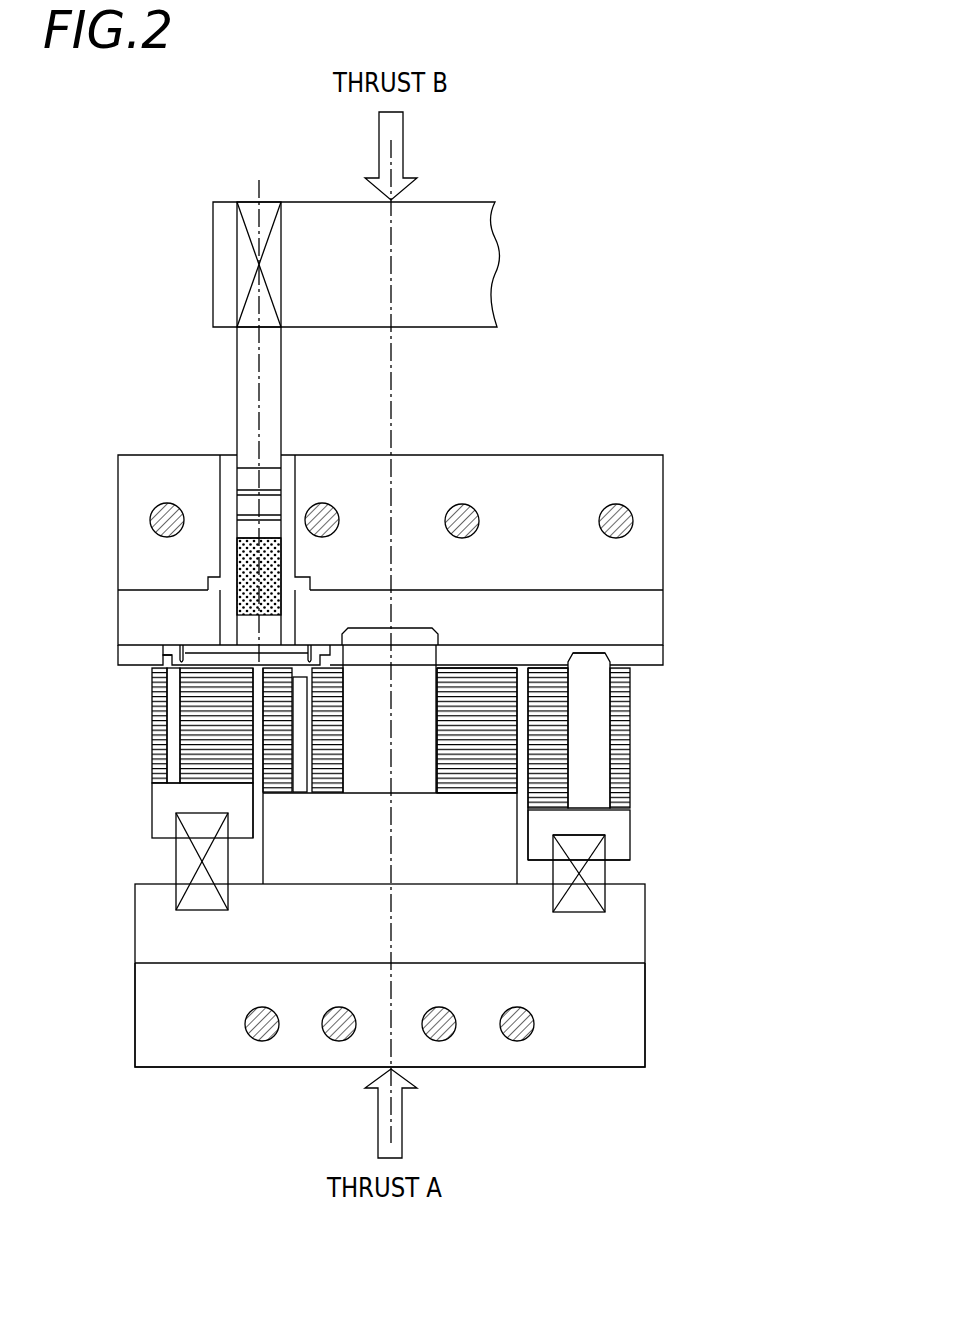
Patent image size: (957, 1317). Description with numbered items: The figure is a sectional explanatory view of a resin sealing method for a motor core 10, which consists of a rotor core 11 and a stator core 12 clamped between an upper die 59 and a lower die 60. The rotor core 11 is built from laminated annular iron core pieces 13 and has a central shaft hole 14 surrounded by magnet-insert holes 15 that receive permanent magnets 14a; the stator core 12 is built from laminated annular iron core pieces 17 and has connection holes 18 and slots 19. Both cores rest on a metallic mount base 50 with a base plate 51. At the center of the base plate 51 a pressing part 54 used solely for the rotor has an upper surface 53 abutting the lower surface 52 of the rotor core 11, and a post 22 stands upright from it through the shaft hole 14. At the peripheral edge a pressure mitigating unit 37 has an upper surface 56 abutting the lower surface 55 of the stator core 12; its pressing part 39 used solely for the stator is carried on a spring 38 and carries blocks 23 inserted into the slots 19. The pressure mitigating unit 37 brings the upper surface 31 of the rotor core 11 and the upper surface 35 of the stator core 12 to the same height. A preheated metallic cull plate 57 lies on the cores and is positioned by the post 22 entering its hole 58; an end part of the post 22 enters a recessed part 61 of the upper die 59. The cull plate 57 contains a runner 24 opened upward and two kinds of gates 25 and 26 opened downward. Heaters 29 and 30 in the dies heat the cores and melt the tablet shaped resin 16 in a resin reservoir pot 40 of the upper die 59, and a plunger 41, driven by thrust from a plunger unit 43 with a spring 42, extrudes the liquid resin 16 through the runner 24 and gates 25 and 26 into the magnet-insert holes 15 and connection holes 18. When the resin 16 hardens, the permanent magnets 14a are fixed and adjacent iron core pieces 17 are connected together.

The motor core 10 is at (418, 674).
The rotor core 11 is at (505, 670).
The stator core 12 is at (634, 748).
The annular iron core piece 13 is at (265, 750).
The shaft hole 14 is at (433, 722).
The permanent magnet 14a is at (157, 740).
The magnet-insert hole 15 is at (183, 698).
The resin 16 is at (237, 557).
The annular iron core piece 17 is at (220, 745).
The connection hole 18 is at (175, 679).
The slot 19 is at (606, 781).
The post 22 is at (370, 668).
The block 23 is at (592, 688).
The runner 24 is at (203, 652).
The gate 25 is at (305, 638).
The gate 26 is at (167, 640).
The heater 29 is at (339, 1043).
The heater 30 is at (477, 503).
The upper surface of rotor core 31 is at (548, 672).
The upper surface of stator core 35 is at (563, 655).
The pressure mitigating unit 37 is at (657, 858).
The spring 38 is at (607, 878).
The pressing part used solely for the stator 39 is at (590, 877).
The resin reservoir pot 40 is at (217, 546).
The plunger 41 is at (287, 487).
The spring 42 is at (222, 260).
The plunger unit 43 is at (211, 201).
The mount base 50 is at (653, 938).
The base plate 51 is at (623, 943).
The lower surface of rotor core 52 is at (252, 790).
The upper surface of pressing part used solely for the rotor 53 is at (255, 770).
The pressing part used solely for the rotor 54 is at (195, 880).
The lower surface of stator core 55 is at (618, 850).
The upper surface of pressure mitigating unit 56 is at (545, 812).
The cull plate 57 is at (672, 653).
The hole 58 is at (473, 663).
The upper die 59 is at (440, 520).
The lower die 60 is at (655, 1020).
The recessed part 61 is at (431, 640).